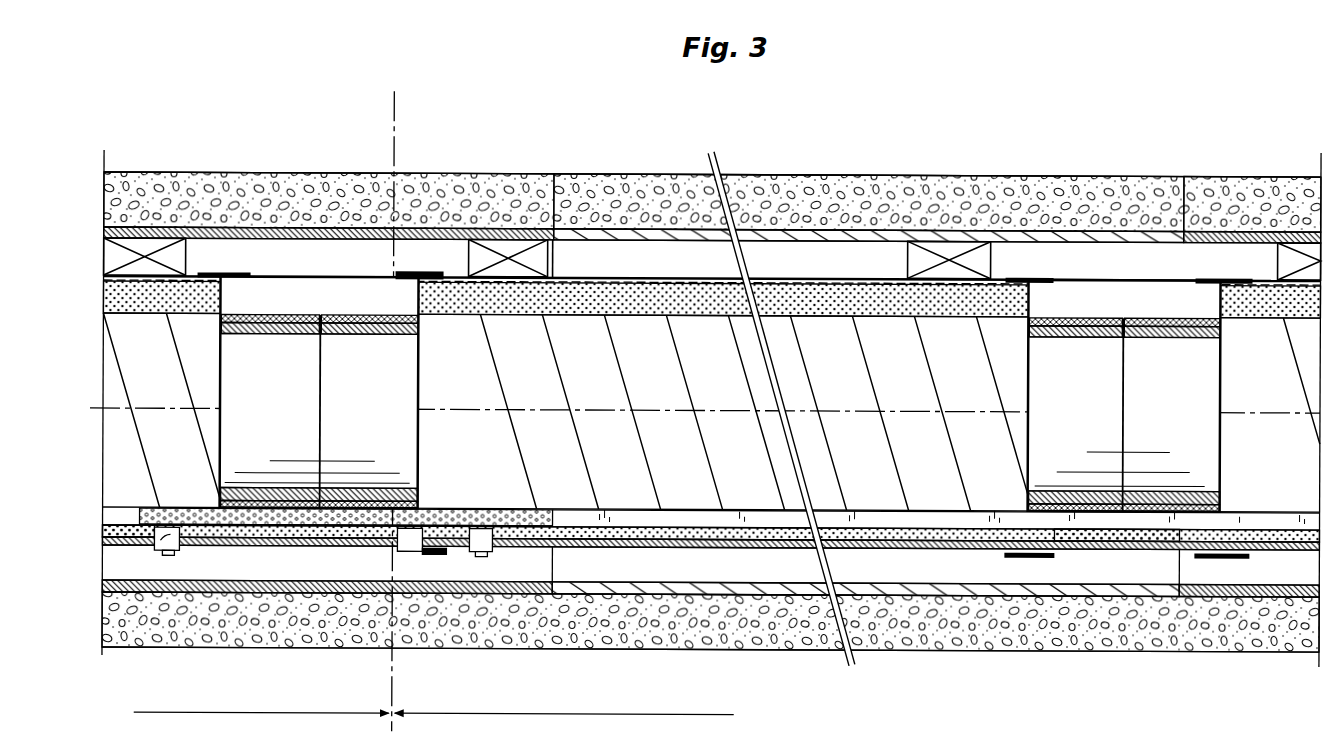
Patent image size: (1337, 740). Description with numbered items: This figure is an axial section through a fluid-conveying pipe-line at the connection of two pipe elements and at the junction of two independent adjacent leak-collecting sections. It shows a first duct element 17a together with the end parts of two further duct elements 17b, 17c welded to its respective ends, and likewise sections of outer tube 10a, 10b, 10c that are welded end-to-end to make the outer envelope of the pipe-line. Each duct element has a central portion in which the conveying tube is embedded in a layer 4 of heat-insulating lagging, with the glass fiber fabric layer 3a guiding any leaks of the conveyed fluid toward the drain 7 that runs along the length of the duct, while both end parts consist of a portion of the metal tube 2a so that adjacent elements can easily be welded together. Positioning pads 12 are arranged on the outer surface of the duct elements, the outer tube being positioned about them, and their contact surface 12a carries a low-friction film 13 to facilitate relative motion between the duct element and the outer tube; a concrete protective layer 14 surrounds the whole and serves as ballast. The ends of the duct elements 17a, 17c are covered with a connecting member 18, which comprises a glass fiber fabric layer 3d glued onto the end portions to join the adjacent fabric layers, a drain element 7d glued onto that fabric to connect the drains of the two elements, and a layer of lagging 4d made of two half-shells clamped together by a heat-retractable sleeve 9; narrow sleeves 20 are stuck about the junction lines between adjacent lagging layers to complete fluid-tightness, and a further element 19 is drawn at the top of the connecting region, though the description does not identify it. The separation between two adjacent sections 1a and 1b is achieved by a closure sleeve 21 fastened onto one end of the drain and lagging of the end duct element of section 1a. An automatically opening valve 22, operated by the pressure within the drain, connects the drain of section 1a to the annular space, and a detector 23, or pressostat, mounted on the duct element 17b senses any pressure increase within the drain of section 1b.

The section 1a is at (564, 698).
The section 1b is at (261, 697).
The metal tube 2a is at (340, 498).
The glass fiber fabric layer 3a is at (633, 340).
The glass fiber fabric layer 3d is at (270, 327).
The layer of heat-insulating material 4 is at (665, 298).
The layer of heat-insulating material 4d is at (340, 327).
The collecting or draining device 7 is at (672, 522).
The drain element 7d is at (276, 527).
The outer envelope or sleeve 9 is at (228, 500).
The section of outer tube 10a is at (795, 240).
The section of outer tube 10b is at (340, 235).
The section of outer tube 10c is at (1262, 240).
The positioning pads or sprags 12 is at (130, 262).
The contact surface 12a is at (552, 238).
The low-friction film 13 is at (175, 238).
The outer protective layer 14 is at (428, 190).
The duct element 17a is at (735, 467).
The duct element 17b is at (183, 467).
The duct element 17c is at (1290, 457).
The connecting member 18 is at (262, 272).
The upper plate 19 is at (282, 278).
The sleeves 20 is at (233, 272).
The closure sleeve 21 is at (403, 540).
The automatically opening valve 22 is at (490, 545).
The detector or pressostat 23 is at (158, 537).